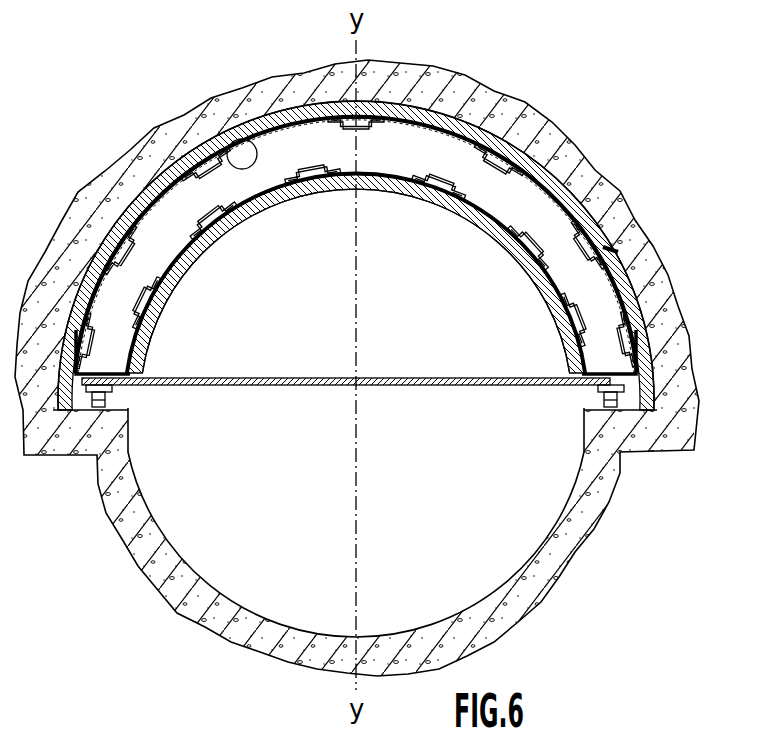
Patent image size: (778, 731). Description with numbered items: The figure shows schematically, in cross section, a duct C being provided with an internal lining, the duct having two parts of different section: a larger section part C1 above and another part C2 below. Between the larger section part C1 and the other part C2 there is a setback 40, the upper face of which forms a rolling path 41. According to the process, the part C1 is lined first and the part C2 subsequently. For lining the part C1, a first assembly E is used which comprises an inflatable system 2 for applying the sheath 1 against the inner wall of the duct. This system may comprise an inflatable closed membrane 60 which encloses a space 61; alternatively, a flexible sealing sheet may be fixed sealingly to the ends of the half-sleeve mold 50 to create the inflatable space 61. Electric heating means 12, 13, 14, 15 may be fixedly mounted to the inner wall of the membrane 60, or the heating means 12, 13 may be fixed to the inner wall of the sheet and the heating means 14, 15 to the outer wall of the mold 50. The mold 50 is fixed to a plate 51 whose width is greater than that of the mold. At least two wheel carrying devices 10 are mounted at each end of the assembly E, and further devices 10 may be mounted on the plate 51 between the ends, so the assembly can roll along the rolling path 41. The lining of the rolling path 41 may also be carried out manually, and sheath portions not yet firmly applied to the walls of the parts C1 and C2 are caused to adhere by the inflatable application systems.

The sheath 1 is at (447, 148).
The inflatable system 2 is at (462, 115).
The wheel carrying devices 10 is at (114, 392).
The electric heating means 12 is at (206, 154).
The electric heating means 13 is at (253, 141).
The electric heating means 14 is at (217, 233).
The electric heating means 15 is at (248, 207).
The setback 40 is at (78, 410).
The rolling path 41 is at (651, 397).
The mold 50 is at (444, 201).
The plate 51 is at (387, 377).
The inflatable closed membrane 60 is at (591, 204).
The space 61 is at (520, 201).
The duct C is at (449, 63).
The larger section part of the duct C1 is at (153, 150).
The other part of the duct C2 is at (596, 518).
The assembly E is at (615, 246).